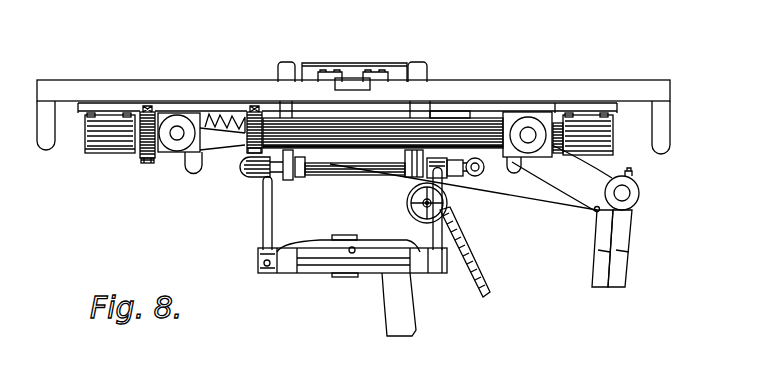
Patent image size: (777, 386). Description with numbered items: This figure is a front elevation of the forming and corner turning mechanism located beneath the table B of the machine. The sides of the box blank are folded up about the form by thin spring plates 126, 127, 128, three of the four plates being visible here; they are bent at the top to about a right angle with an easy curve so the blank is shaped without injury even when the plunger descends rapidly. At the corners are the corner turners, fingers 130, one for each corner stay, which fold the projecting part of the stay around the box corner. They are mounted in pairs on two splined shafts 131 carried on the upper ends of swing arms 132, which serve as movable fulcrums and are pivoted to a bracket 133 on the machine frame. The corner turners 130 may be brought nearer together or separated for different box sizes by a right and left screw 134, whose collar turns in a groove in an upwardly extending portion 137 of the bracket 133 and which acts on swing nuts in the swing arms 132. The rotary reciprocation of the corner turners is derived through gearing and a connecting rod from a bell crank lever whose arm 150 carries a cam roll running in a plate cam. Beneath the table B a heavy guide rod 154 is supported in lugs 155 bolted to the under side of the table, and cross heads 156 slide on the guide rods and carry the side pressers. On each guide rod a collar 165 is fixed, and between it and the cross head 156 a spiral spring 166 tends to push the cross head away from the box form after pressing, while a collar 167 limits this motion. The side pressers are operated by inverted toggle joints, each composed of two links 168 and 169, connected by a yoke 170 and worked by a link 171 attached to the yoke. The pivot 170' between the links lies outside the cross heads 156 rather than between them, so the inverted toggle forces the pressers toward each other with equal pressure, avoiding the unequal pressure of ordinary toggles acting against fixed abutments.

The table B is at (68, 79).
The spring plate 126 is at (445, 57).
The spring plate 127 is at (402, 54).
The spring plate 128 is at (297, 63).
The corner turner finger 130 is at (410, 167).
The splined shaft 131 is at (352, 183).
The swing arm 132 is at (266, 203).
The bracket 133 is at (398, 312).
The right and left screw 134 is at (445, 203).
The upwardly extending portion 137 is at (418, 232).
The bell crank arm 150 is at (475, 178).
The guide rod 154 is at (486, 137).
The lug 155 is at (107, 143).
The cross head 156 is at (160, 112).
The collar 165 is at (246, 163).
The spiral spring 166 is at (233, 112).
The collar 167 is at (147, 164).
The toggle link 168 is at (548, 196).
The toggle link 169 is at (598, 206).
The pivot 170' is at (659, 189).
The yoke 170 is at (653, 247).
The link 171 is at (622, 265).